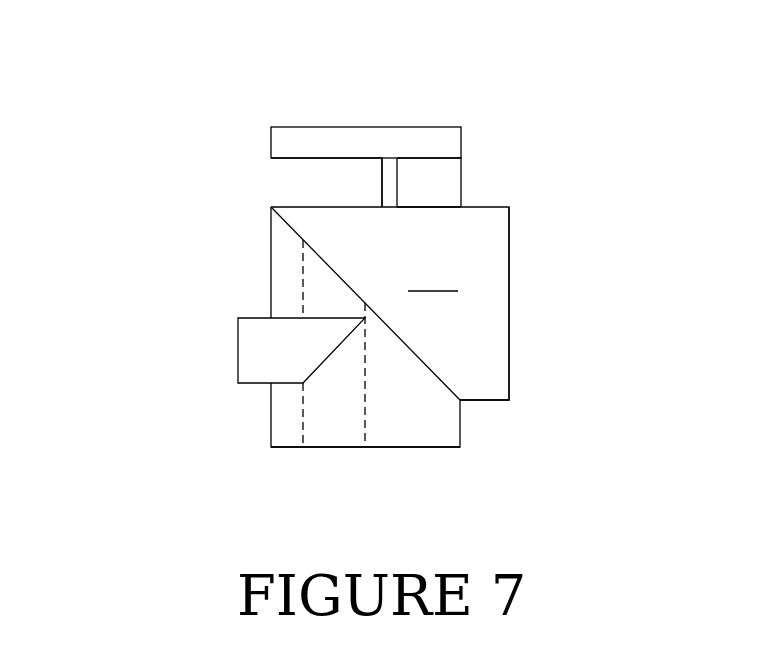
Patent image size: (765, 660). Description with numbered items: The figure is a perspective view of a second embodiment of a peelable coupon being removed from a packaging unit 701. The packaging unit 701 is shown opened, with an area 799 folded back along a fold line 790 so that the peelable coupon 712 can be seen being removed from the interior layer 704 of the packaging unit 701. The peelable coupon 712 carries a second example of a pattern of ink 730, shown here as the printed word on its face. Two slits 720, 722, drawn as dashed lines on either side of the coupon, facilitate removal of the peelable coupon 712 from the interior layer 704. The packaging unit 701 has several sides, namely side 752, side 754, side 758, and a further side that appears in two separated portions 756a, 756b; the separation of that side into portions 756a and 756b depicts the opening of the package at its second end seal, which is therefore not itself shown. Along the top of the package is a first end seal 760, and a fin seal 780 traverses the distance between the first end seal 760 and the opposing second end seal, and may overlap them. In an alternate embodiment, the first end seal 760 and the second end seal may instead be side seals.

The packaging unit 701 is at (193, 117).
The side 752 is at (298, 124).
The first end seal 760 is at (430, 143).
The side 758 is at (268, 190).
The fin seal 780 is at (392, 178).
The side 754 is at (472, 194).
The side portion 756b is at (514, 268).
The side portion 756a is at (340, 452).
The fold line 790 is at (439, 387).
The area 799 is at (433, 278).
The slit 720 is at (298, 419).
The slit 722 is at (369, 420).
The interior layer 704 is at (323, 420).
The peelable coupon 712 is at (266, 359).
The pattern of ink 730 is at (251, 350).